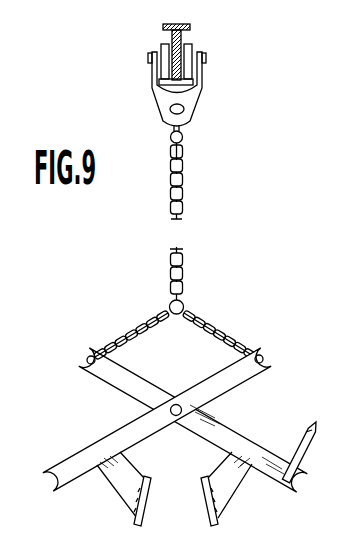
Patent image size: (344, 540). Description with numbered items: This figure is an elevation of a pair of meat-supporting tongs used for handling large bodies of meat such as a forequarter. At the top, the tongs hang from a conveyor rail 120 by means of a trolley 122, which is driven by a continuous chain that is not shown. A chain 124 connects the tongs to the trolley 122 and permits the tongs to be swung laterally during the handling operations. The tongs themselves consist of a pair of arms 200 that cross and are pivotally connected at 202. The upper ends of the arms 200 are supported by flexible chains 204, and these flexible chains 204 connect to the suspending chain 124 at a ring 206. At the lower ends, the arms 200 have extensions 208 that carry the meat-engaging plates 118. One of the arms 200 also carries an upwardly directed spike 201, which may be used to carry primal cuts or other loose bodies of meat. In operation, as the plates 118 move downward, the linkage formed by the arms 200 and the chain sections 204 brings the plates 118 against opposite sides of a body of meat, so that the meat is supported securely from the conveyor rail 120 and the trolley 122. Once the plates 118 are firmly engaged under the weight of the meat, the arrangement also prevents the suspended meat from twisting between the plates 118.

The conveyor rail 120 is at (183, 31).
The trolley 122 is at (198, 106).
The chain 124 is at (183, 181).
The ring 206 is at (182, 307).
The flexible chains 204 is at (155, 325).
The arms 200 is at (207, 385).
The pivot 202 is at (182, 408).
The extensions 208 is at (127, 495).
The meat-engaging plates 118 is at (206, 480).
The spike 201 is at (303, 440).